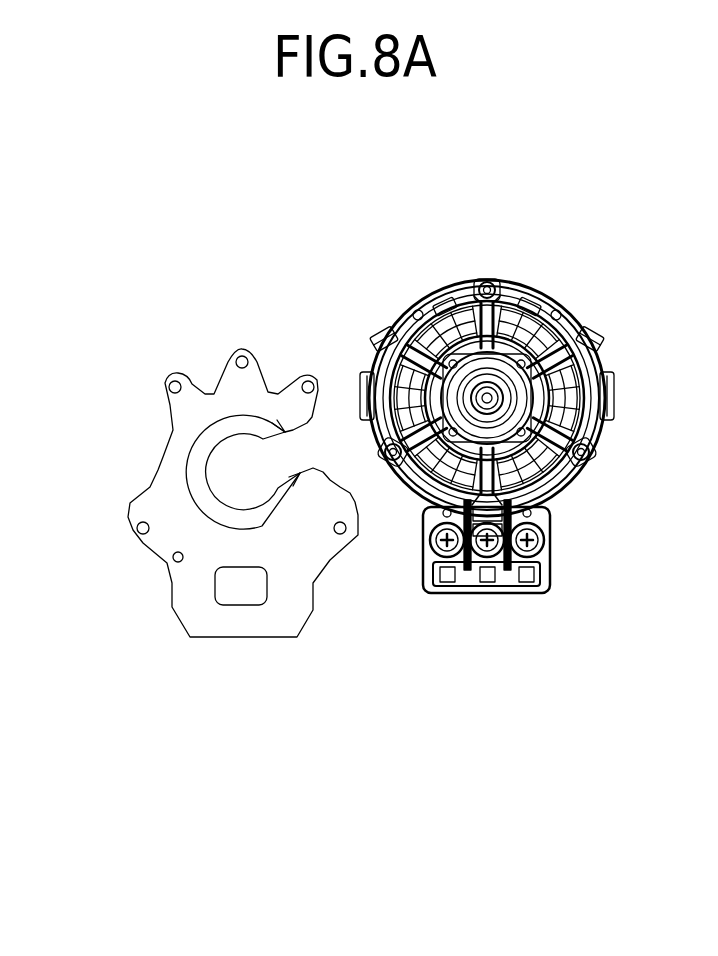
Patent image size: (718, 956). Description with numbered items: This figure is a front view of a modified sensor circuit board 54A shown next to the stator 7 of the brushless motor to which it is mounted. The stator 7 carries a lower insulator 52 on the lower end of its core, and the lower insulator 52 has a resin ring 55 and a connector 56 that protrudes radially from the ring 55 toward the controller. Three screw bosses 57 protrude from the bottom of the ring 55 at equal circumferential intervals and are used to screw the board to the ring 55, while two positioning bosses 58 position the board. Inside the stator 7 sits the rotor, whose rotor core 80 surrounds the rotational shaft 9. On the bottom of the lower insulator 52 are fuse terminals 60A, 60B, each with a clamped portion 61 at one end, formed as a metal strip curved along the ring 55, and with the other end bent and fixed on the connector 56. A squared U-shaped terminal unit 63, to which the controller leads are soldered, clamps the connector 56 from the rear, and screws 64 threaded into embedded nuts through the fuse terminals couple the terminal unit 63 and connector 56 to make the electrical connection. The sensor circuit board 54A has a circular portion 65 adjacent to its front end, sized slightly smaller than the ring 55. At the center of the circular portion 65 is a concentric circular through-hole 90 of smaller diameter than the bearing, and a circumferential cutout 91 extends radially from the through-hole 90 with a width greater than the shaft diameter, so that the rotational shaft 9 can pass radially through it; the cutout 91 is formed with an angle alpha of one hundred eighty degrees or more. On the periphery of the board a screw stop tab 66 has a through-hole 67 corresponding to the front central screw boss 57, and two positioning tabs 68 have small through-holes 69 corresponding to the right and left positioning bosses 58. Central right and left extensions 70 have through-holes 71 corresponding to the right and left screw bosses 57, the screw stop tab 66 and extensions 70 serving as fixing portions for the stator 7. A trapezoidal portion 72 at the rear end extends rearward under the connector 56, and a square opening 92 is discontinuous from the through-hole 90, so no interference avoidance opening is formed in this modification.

The stator 7 is at (428, 243).
The rotor core 80 is at (455, 285).
The screw bosses 57 is at (490, 285).
The lower insulator 52 is at (518, 290).
The ring 55 is at (568, 292).
The positioning bosses 58 is at (410, 300).
The rotational shaft 9 is at (598, 385).
The fuse terminal 60B is at (607, 412).
The fuse terminal 60A is at (425, 525).
The connector 56 is at (548, 540).
The screws 64 is at (548, 580).
The terminal unit 63 is at (462, 595).
The clamped portion 61 is at (503, 598).
The sensor circuit board 54A is at (242, 348).
The screw stop tab 66 is at (250, 350).
The through-hole 67 is at (238, 350).
The positioning tabs 68 is at (165, 378).
The small through-holes 69 is at (173, 379).
The circular portion 65 is at (160, 430).
The through-hole 90 is at (190, 462).
The cutout 91 is at (298, 435).
The extensions 70 is at (132, 510).
The through-holes 71 is at (140, 535).
The square opening 92 is at (205, 600).
The trapezoidal portion 72 is at (255, 635).